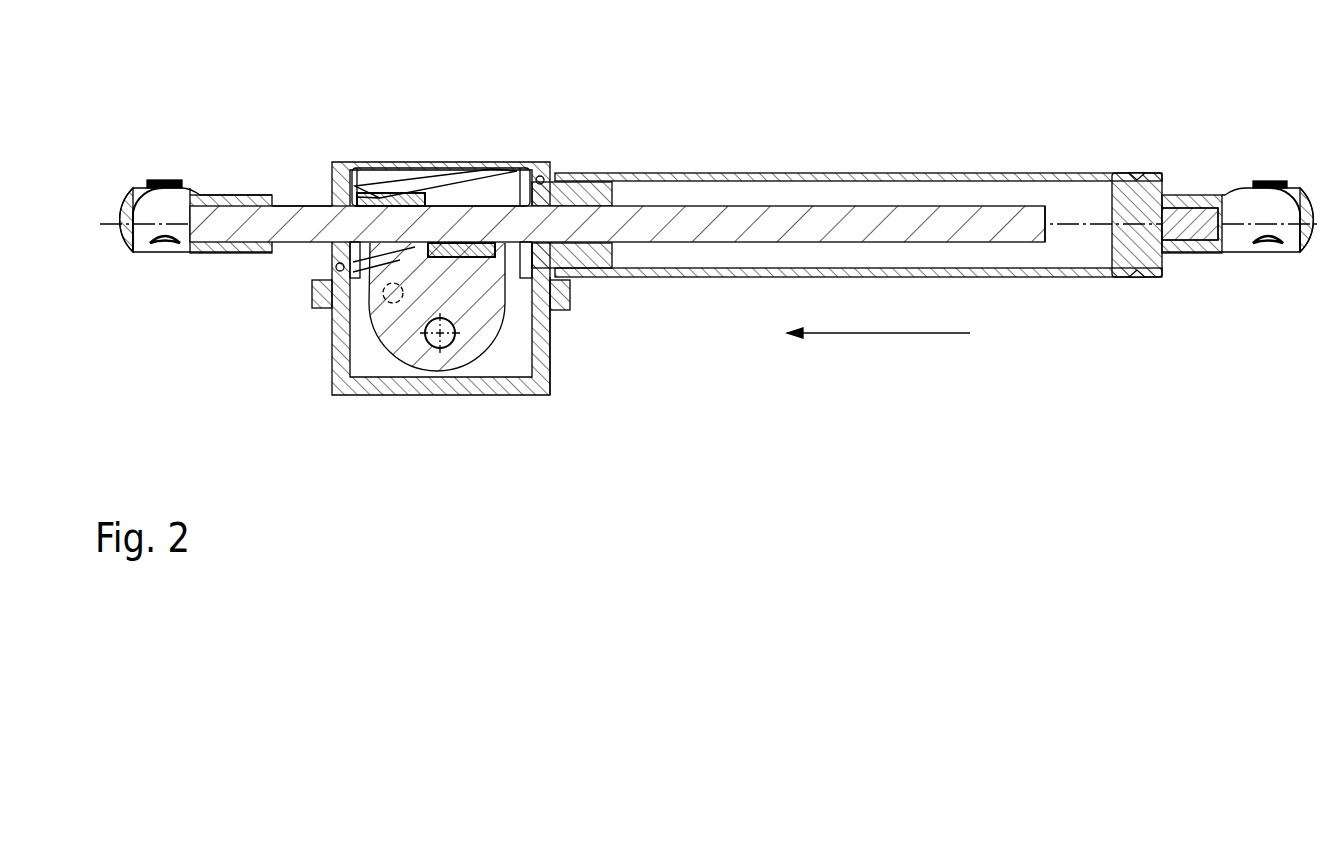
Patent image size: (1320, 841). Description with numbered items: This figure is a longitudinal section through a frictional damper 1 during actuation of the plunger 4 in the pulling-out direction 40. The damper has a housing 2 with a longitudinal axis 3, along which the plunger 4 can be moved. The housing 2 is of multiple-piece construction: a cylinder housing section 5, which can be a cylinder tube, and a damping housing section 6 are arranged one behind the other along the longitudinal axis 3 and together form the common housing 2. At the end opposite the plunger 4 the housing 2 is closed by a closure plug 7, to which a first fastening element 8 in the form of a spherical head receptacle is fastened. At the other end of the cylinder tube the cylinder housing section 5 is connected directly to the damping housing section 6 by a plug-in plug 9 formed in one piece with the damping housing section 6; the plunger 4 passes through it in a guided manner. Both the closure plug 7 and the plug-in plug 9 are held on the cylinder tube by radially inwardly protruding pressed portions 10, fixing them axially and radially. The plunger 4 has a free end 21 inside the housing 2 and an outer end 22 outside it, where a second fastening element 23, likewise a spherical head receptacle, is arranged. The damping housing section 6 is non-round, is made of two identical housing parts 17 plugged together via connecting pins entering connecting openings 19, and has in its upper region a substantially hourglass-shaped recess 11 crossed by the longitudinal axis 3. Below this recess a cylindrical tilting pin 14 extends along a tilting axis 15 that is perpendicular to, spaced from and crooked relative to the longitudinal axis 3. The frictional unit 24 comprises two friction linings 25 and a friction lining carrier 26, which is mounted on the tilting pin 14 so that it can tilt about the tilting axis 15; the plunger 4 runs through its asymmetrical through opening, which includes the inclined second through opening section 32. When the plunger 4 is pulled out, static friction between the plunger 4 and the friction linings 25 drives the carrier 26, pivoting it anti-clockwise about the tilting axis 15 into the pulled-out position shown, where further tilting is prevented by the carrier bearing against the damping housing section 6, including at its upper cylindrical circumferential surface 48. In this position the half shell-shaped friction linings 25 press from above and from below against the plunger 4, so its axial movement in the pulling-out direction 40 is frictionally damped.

The frictional damper 1 is at (786, 130).
The housing 2 is at (738, 170).
The longitudinal axis 3 is at (915, 215).
The plunger 4 is at (298, 206).
The cylinder housing section 5 is at (830, 173).
The damping housing section 6 is at (346, 158).
The closure plug 7 is at (1150, 172).
The first fastening element 8 is at (1298, 182).
The plug-in plug 9 is at (598, 266).
The pressed portions 10 is at (1135, 172).
The hourglass-shaped recess 11 is at (512, 186).
The tilting pin 14 is at (452, 348).
The tilting axis 15 is at (439, 340).
The housing parts 17 is at (546, 336).
The connecting openings 19 is at (545, 178).
The free end 21 is at (1037, 198).
The outer end 22 is at (243, 195).
The second fastening element 23 is at (130, 186).
The frictional unit 24 is at (495, 360).
The friction linings 25 is at (448, 250).
The friction lining carrier 26 is at (380, 358).
The second through opening section 32 is at (482, 172).
The pulling-out direction 40 is at (875, 335).
The upper cylindrical circumferential surface 48 is at (467, 198).